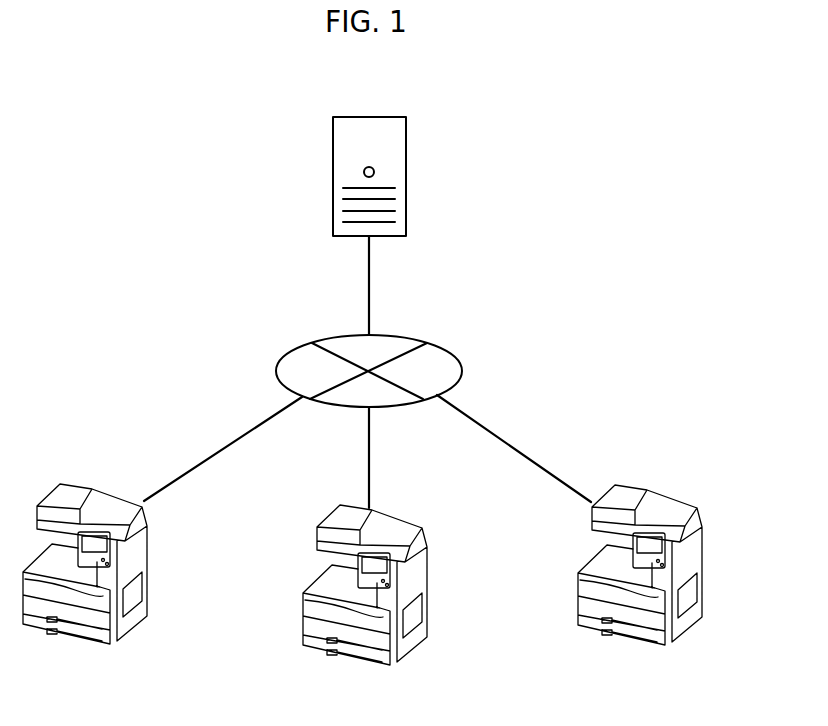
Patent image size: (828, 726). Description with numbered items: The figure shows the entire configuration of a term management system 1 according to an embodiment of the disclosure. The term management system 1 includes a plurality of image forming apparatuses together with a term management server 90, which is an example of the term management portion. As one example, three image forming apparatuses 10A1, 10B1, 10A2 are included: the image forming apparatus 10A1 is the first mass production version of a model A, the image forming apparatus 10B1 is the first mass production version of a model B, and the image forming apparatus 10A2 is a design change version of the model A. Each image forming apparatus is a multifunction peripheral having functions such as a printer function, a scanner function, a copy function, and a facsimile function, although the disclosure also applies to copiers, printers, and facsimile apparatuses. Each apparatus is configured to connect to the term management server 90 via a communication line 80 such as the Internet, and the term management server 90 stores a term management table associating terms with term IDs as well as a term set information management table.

The term management system 1 is at (134, 183).
The term management server 90 is at (382, 117).
The communication line 80 is at (452, 352).
The image forming apparatus 10A1 is at (88, 484).
The image forming apparatus 10B1 is at (398, 515).
The image forming apparatus 10A2 is at (637, 485).